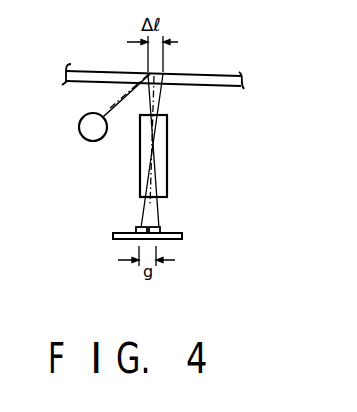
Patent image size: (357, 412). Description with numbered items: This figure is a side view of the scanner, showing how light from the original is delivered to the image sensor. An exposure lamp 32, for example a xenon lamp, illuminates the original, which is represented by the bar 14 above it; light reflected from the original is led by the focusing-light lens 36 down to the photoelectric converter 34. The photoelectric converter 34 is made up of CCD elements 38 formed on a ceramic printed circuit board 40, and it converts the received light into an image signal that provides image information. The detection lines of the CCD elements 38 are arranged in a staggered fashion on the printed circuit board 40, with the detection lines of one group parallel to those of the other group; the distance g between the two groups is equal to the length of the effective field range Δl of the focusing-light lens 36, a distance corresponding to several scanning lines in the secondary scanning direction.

The scale 14 is at (236, 75).
The exposure lamp 32 is at (86, 142).
The focusing-light lens 36 is at (168, 160).
The CCD elements 38 is at (138, 228).
The printed circuit board 40 is at (182, 238).
The photoelectric converter 34 is at (114, 236).